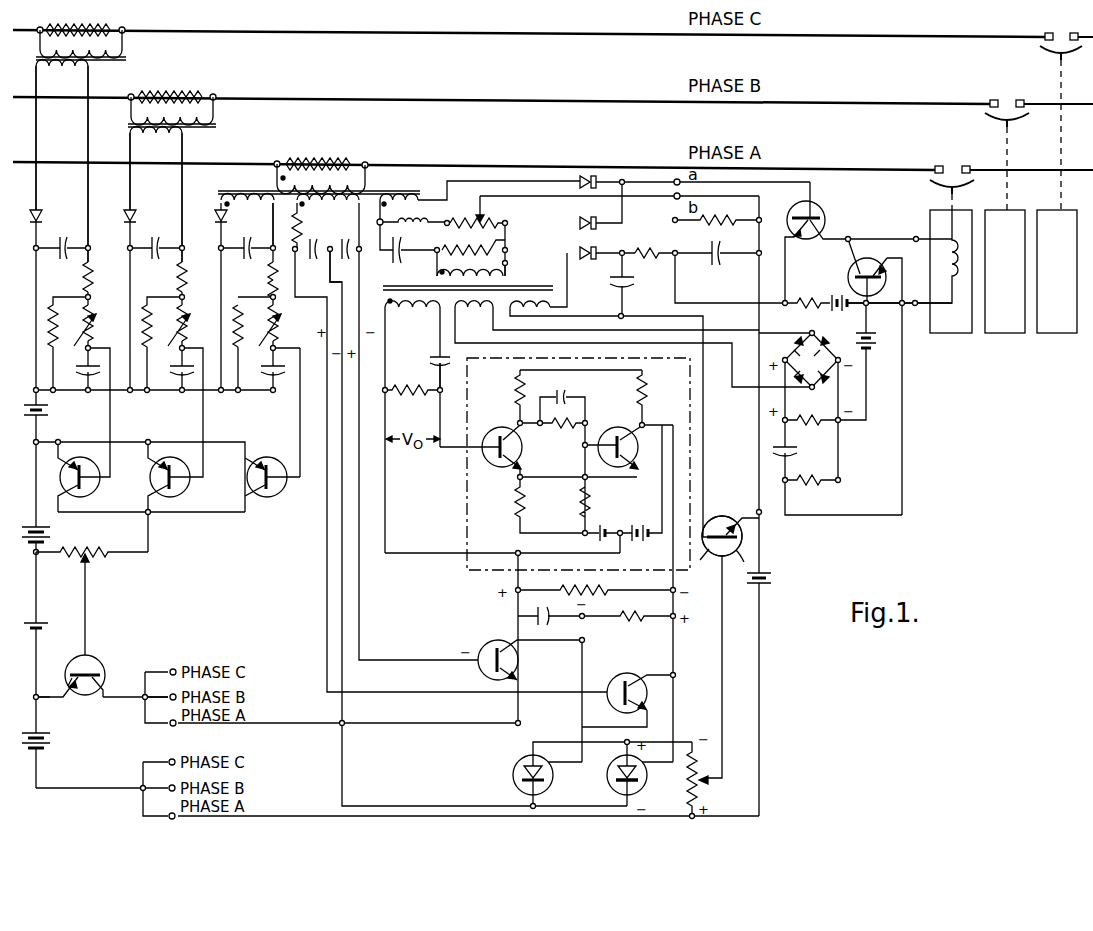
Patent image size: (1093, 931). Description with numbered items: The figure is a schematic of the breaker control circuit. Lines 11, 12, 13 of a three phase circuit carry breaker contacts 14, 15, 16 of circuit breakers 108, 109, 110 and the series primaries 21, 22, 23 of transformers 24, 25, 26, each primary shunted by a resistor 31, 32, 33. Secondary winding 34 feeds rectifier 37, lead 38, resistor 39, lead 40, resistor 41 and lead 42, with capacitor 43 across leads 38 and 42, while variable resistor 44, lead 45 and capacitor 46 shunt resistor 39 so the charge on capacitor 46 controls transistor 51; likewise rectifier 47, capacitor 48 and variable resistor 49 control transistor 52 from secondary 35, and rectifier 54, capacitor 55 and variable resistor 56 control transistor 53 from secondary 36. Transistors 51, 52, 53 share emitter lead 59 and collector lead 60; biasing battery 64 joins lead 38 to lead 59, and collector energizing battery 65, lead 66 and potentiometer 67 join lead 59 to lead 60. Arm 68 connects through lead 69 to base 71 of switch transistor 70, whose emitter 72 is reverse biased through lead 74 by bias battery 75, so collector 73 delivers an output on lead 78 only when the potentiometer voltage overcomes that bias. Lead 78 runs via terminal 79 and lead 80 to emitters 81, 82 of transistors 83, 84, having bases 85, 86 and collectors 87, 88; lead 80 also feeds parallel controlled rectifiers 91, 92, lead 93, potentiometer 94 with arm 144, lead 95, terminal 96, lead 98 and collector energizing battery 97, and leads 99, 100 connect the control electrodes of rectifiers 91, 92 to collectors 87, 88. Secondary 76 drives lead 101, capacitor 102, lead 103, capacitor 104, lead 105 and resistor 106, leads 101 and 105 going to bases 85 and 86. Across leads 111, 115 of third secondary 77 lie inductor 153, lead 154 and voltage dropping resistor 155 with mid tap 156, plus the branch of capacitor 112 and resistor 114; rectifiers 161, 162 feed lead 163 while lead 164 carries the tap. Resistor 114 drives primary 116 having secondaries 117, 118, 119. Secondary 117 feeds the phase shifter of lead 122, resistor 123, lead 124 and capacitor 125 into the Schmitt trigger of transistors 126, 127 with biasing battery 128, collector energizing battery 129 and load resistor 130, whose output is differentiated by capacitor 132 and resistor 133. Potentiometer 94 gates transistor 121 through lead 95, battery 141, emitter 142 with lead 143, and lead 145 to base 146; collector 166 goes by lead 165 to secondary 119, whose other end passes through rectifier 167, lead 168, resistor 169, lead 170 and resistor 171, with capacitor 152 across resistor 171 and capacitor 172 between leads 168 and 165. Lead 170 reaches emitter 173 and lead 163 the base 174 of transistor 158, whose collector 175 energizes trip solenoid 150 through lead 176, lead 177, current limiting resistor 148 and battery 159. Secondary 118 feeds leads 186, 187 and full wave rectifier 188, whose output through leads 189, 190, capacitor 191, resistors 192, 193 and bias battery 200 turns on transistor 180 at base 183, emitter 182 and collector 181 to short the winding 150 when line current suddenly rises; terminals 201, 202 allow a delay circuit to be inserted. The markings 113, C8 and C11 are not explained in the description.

The line 11 is at (422, 162).
The line 12 is at (377, 95).
The line 13 is at (346, 28).
The breaker contacts 14 is at (937, 166).
The breaker contacts 15 is at (992, 101).
The breaker contacts 16 is at (1044, 34).
The primary 21 is at (360, 186).
The primary 22 is at (194, 118).
The primary 23 is at (103, 51).
The transformer 24 is at (245, 186).
The transformer 25 is at (240, 136).
The transformer 26 is at (149, 69).
The resistor 31 is at (326, 162).
The resistor 32 is at (176, 94).
The resistor 33 is at (78, 30).
The secondary winding 34 is at (221, 198).
The secondary winding 35 is at (163, 137).
The secondary winding 36 is at (69, 70).
The rectifier 37 is at (216, 218).
The lead 38 is at (190, 392).
The resistor 39 is at (262, 318).
The lead 40 is at (268, 285).
The resistor 41 is at (266, 268).
The lead 42 is at (273, 210).
The capacitor 43 is at (245, 239).
The variable resistor 44 is at (281, 319).
The lead 45 is at (300, 423).
The capacitor 46 is at (266, 355).
The rectifier 47 is at (130, 214).
The capacitor 48 is at (185, 353).
The variable resistor 49 is at (186, 290).
The transistor 51 is at (277, 489).
The transistor 52 is at (189, 488).
The transistor 53 is at (89, 488).
The rectifier 54 is at (38, 213).
The capacitor 55 is at (92, 361).
The variable resistor 56 is at (91, 298).
The lead 59 is at (129, 442).
The lead 60 is at (149, 528).
The biasing battery 64 is at (36, 416).
The collector energizing battery 65 is at (36, 529).
The lead 66 is at (38, 557).
The potentiometer 67 is at (94, 551).
The arm 68 is at (93, 569).
The lead 69 is at (87, 611).
The transistor 70 is at (95, 651).
The base 71 is at (74, 660).
The emitter 72 is at (71, 673).
The collector 73 is at (104, 674).
The lead 74 is at (55, 704).
The bias battery 75 is at (39, 627).
The secondary 76 is at (328, 207).
The third secondary 77 is at (419, 200).
The lead 78 is at (128, 701).
The terminal 79 is at (176, 726).
The lead 80 is at (302, 726).
The emitter 81 is at (520, 669).
The emitter 82 is at (647, 700).
The transistor 83 is at (486, 645).
The transistor 84 is at (608, 680).
The base 85 is at (480, 662).
The base 86 is at (614, 716).
The collector 87 is at (518, 650).
The collector 88 is at (629, 676).
The controlled rectifier 91 is at (510, 780).
The controlled rectifier 92 is at (610, 782).
The lead 93 is at (624, 745).
The potentiometer 94 is at (645, 778).
The lead 95 is at (320, 809).
The terminal 96 is at (170, 815).
The collector energizing battery 97 is at (40, 734).
The lead 98 is at (113, 787).
The lead 99 is at (581, 724).
The lead 100 is at (666, 546).
The lead 101 is at (357, 203).
The capacitor 102 is at (344, 261).
The lead 103 is at (340, 289).
The capacitor 104 is at (313, 261).
The lead 105 is at (326, 525).
The resistor 106 is at (313, 226).
The circuit breaker 108 is at (966, 337).
The circuit breaker 109 is at (1004, 337).
The circuit breaker 110 is at (1050, 337).
The lead 111 is at (486, 267).
The capacitor 112 is at (402, 246).
The winding terminal 113 is at (437, 271).
The resistor 114 is at (506, 251).
The lead 115 is at (506, 264).
The primary 116 is at (468, 277).
The secondary 117 is at (431, 306).
The secondary 118 is at (489, 305).
The secondary 119 is at (557, 310).
The transistor 121 is at (739, 562).
The lead 122 is at (394, 350).
The resistor 123 is at (428, 384).
The lead 124 is at (432, 410).
The capacitor 125 is at (426, 362).
The transistor 126 is at (508, 421).
The transistor 127 is at (634, 421).
The biasing battery 128 is at (595, 539).
The collector energizing battery 129 is at (635, 518).
The load resistor 130 is at (599, 585).
The capacitor 132 is at (535, 621).
The resistor 133 is at (624, 616).
The battery 141 is at (772, 577).
The emitter 142 is at (741, 524).
The lead 143 is at (757, 450).
The arm 144 is at (704, 780).
The lead 145 is at (723, 668).
The base 146 is at (701, 561).
The current limiting resistor 148 is at (799, 312).
The trip solenoid 150 is at (906, 256).
The capacitor 152 is at (717, 245).
The inductor 153 is at (430, 227).
The lead 154 is at (473, 171).
The voltage dropping resistor 155 is at (506, 226).
The mid tap 156 is at (503, 213).
The transistor 158 is at (811, 211).
The battery 159 is at (851, 316).
The rectifier 161 is at (604, 178).
The rectifier 162 is at (594, 223).
The lead 163 is at (647, 179).
The lead 164 is at (626, 197).
The lead 165 is at (705, 430).
The collector 166 is at (713, 516).
The rectifier 167 is at (581, 250).
The lead 168 is at (620, 252).
The resistor 169 is at (640, 248).
The lead 170 is at (700, 286).
The resistor 171 is at (730, 219).
The capacitor 172 is at (638, 293).
The emitter 173 is at (795, 241).
The base 174 is at (822, 213).
The collector 175 is at (827, 222).
The lead 176 is at (893, 238).
The lead 177 is at (915, 313).
The transistor 180 is at (850, 266).
The collector 181 is at (850, 266).
The emitter 182 is at (891, 258).
The base 183 is at (850, 285).
The lead 186 is at (742, 331).
The lead 187 is at (730, 386).
The full wave rectifier 188 is at (784, 351).
The lead 189 is at (866, 404).
The lead 190 is at (791, 403).
The capacitor 191 is at (796, 455).
The resistor 192 is at (824, 484).
The resistor 193 is at (789, 450).
The bias battery 200 is at (880, 340).
The terminal 201 is at (915, 237).
The terminal 202 is at (922, 337).
The transformer core C8 is at (406, 284).
The RC network C11 is at (747, 285).